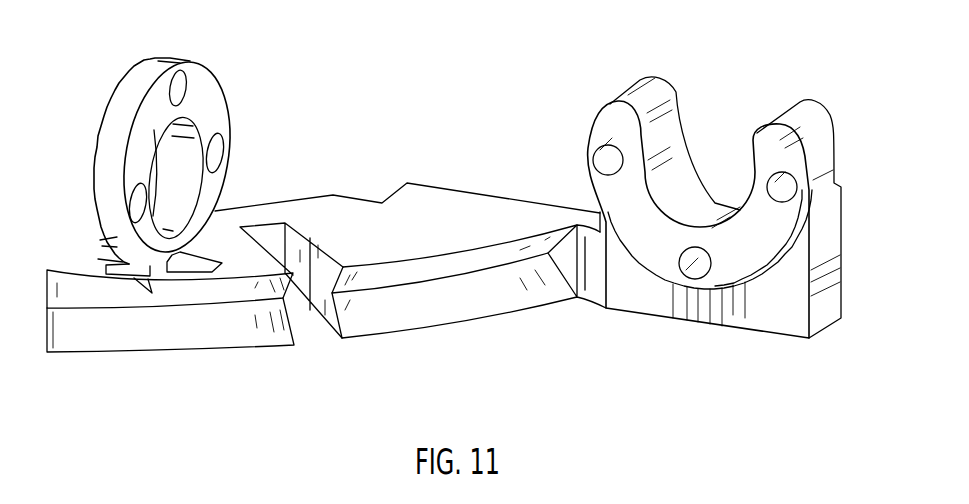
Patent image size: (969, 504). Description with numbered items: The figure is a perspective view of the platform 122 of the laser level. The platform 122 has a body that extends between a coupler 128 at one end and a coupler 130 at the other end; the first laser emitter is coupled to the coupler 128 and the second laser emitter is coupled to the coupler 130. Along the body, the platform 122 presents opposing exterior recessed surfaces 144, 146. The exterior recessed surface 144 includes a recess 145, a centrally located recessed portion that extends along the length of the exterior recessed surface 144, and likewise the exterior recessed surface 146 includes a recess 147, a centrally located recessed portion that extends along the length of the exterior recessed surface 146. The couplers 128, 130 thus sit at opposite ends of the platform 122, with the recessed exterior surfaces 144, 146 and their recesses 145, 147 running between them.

The platform 122 is at (324, 218).
The coupler 128 is at (845, 111).
The coupler 130 is at (110, 80).
The exterior recessed surface 144 is at (225, 340).
The recess 145 is at (74, 320).
The exterior recessed surface 146 is at (510, 295).
The recess 147 is at (410, 292).